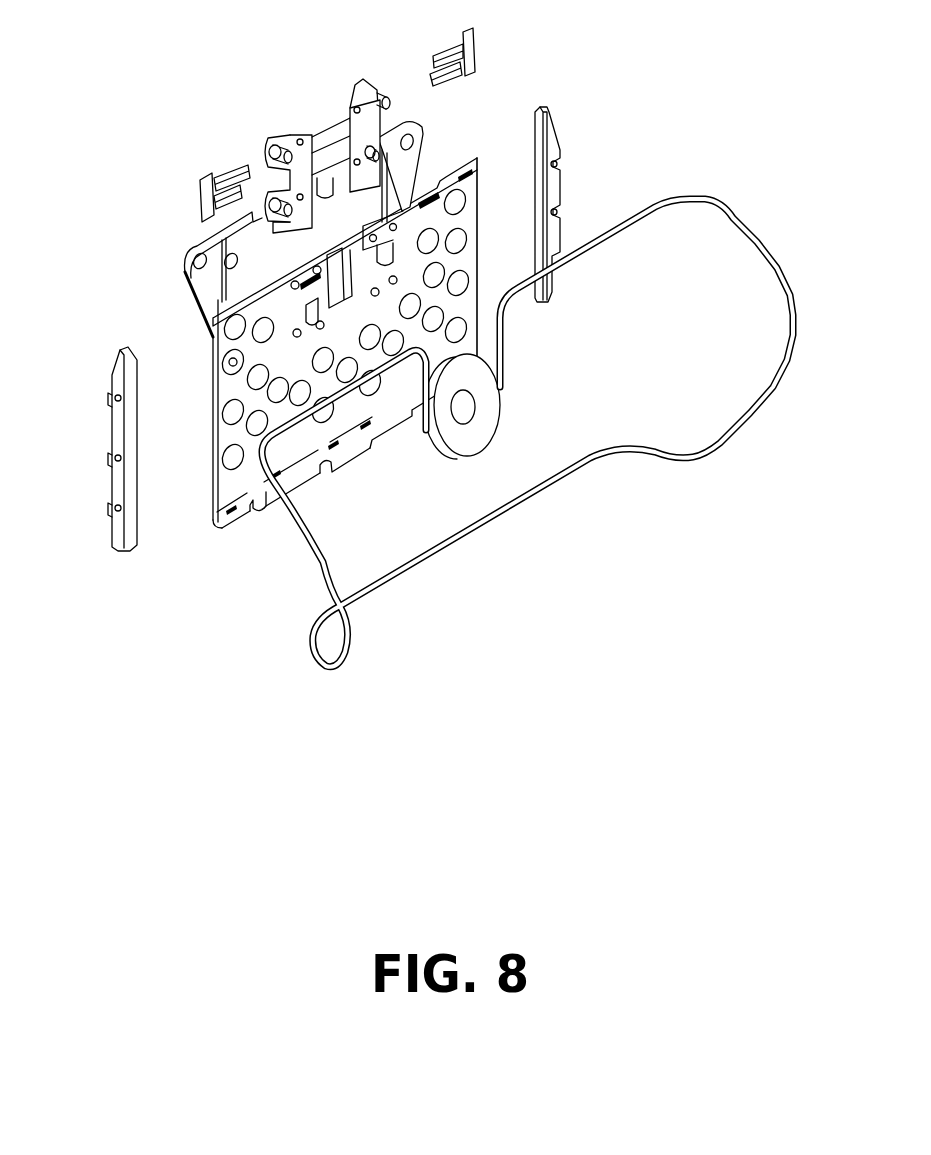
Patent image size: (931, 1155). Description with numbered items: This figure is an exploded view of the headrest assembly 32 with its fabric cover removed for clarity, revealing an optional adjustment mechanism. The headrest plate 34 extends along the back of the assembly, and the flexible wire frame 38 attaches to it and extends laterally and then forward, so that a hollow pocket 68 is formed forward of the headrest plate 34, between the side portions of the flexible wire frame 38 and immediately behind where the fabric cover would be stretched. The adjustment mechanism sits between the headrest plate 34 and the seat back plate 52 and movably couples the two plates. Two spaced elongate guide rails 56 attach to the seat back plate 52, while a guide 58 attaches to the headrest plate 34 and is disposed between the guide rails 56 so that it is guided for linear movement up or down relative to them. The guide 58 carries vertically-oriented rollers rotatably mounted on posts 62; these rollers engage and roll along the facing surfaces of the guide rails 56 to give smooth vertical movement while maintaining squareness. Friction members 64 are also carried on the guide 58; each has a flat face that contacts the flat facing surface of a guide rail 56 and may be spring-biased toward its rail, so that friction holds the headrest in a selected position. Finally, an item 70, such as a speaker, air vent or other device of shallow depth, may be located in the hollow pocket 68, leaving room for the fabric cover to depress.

The headrest assembly 32 is at (439, 337).
The headrest plate 34 is at (213, 490).
The flexible wire frame 38 is at (752, 417).
The seat back plate 52 is at (304, 330).
The guide rails 56 is at (546, 131).
The guide 58 is at (302, 128).
The posts 62 is at (364, 82).
The friction members 64 is at (200, 203).
The hollow pocket 68 is at (575, 440).
The item 70 is at (447, 455).